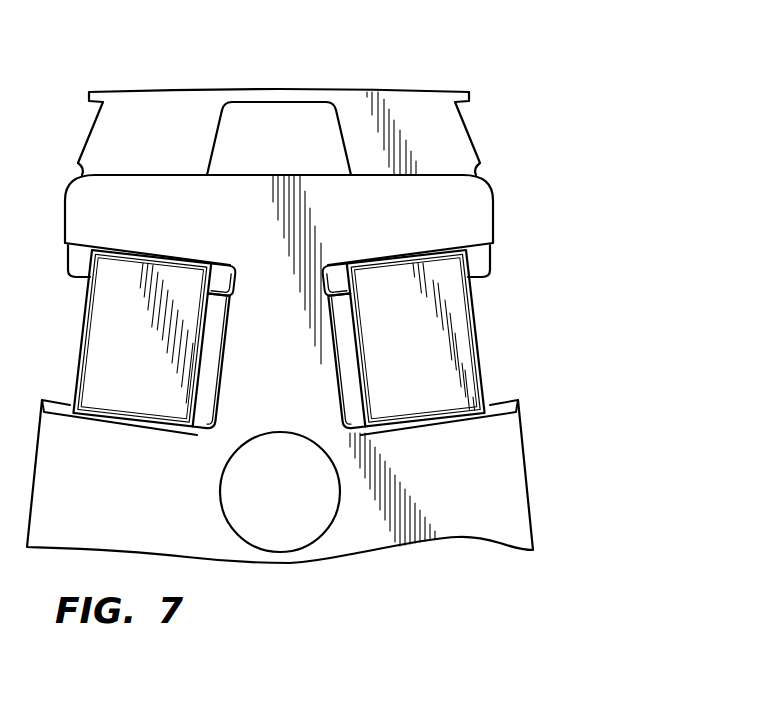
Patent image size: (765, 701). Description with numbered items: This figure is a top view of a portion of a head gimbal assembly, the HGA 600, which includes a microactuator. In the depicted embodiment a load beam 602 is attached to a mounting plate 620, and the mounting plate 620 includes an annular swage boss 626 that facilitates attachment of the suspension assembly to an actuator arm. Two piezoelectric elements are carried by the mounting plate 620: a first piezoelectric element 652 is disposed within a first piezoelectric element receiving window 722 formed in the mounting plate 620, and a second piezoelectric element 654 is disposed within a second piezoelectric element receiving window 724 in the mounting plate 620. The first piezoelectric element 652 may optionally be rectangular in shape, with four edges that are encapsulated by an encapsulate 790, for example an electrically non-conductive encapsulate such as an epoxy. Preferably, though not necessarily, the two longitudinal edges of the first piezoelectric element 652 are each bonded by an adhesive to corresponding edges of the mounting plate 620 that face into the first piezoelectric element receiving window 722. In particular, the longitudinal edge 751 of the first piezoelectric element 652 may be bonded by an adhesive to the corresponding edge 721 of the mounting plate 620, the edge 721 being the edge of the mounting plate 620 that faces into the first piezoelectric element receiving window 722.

The HGA 600 is at (570, 68).
The load beam 602 is at (127, 110).
The mounting plate 620 is at (466, 205).
The annular swage boss 626 is at (242, 533).
The first piezoelectric element 652 is at (430, 354).
The second piezoelectric element 654 is at (150, 354).
The edge of the mounting plate 721 is at (440, 245).
The first piezoelectric element receiving window 722 is at (345, 328).
The second piezoelectric element receiving window 724 is at (212, 355).
The longitudinal edge of the first piezoelectric element 751 is at (467, 292).
The encapsulate 790 is at (480, 333).